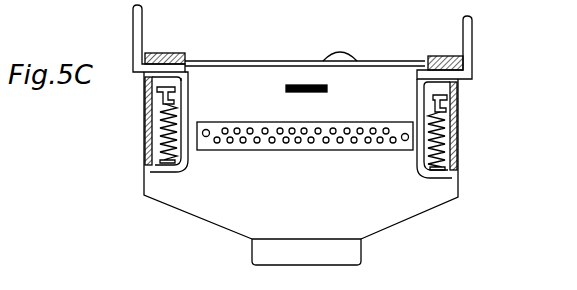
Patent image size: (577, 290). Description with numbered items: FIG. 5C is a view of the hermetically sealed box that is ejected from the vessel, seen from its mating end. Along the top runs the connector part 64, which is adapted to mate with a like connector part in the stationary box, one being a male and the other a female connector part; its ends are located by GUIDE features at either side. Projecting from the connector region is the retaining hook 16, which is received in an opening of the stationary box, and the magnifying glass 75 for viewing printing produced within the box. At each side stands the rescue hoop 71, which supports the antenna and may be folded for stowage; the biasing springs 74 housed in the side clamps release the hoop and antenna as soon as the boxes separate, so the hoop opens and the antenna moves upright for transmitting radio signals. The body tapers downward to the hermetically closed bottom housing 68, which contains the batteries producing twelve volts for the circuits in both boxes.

The retaining hook 16 is at (306, 85).
The connector part 64 is at (268, 122).
The bottom housing 68 is at (258, 250).
The rescue hoop 71 is at (140, 28).
The biasing springs 74 is at (163, 133).
The magnifying glass 75 is at (351, 54).
The guide holes GUIDE is at (206, 130).